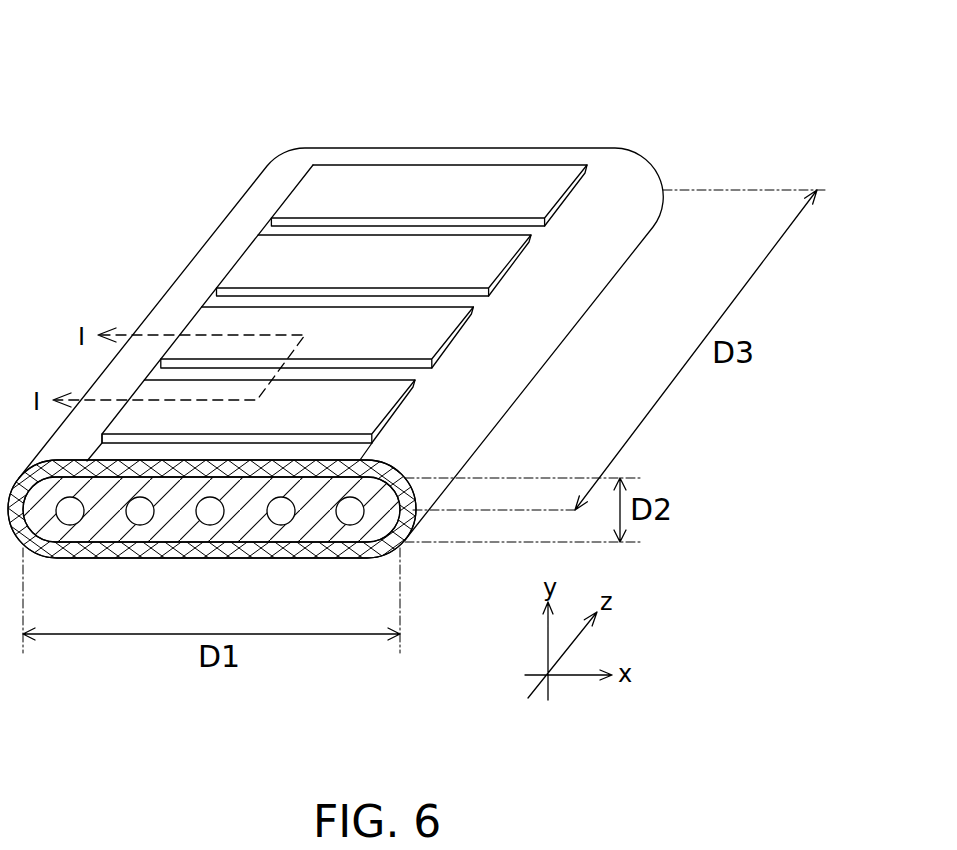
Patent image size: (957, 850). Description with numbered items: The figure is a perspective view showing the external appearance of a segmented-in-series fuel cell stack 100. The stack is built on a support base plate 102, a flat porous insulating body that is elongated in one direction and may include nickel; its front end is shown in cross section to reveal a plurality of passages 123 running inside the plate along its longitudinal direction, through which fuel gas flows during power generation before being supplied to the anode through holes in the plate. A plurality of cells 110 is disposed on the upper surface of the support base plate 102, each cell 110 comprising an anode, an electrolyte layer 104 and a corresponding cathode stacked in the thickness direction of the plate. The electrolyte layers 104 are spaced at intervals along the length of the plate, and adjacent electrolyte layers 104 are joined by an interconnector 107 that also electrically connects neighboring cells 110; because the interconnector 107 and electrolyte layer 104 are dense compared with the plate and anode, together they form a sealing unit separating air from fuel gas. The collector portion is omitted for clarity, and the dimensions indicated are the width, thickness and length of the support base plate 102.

The segmented-in-series fuel cell stack 100 is at (351, 312).
The support base plate 102 is at (348, 547).
The electrolyte layer 104 is at (407, 493).
The interconnector 107 is at (397, 350).
The cell 110 is at (307, 195).
The passage 123 is at (211, 514).